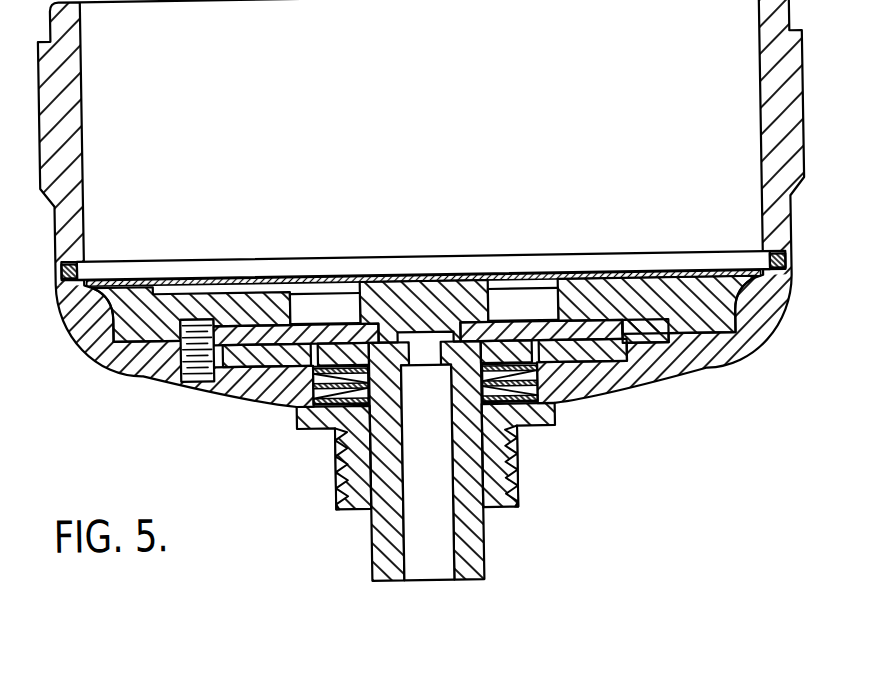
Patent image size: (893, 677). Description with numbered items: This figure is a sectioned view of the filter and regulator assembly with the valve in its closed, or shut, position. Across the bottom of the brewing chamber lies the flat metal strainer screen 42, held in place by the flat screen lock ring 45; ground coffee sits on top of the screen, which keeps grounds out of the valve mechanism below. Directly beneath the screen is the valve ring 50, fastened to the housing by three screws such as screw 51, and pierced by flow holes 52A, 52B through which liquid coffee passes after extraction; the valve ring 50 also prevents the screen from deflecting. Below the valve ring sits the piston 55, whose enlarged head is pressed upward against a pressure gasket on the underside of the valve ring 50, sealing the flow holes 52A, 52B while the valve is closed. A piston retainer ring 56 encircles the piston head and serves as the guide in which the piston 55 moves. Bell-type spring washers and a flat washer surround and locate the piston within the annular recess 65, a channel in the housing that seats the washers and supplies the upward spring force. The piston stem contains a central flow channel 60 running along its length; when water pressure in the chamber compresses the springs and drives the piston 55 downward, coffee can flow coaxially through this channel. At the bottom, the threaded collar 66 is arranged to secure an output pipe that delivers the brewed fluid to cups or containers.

The flat metal strainer screen 42 is at (217, 275).
The flat screen lock ring 45 is at (682, 266).
The valve ring 50 is at (690, 324).
The screw 51 is at (193, 381).
The flow hole 52A is at (342, 302).
The flow hole 52B is at (526, 304).
The piston 55 is at (367, 561).
The piston retainer ring 56 is at (264, 355).
The flow channel 60 is at (423, 555).
The annular recess 65 is at (540, 379).
The threaded collar 66 is at (522, 499).